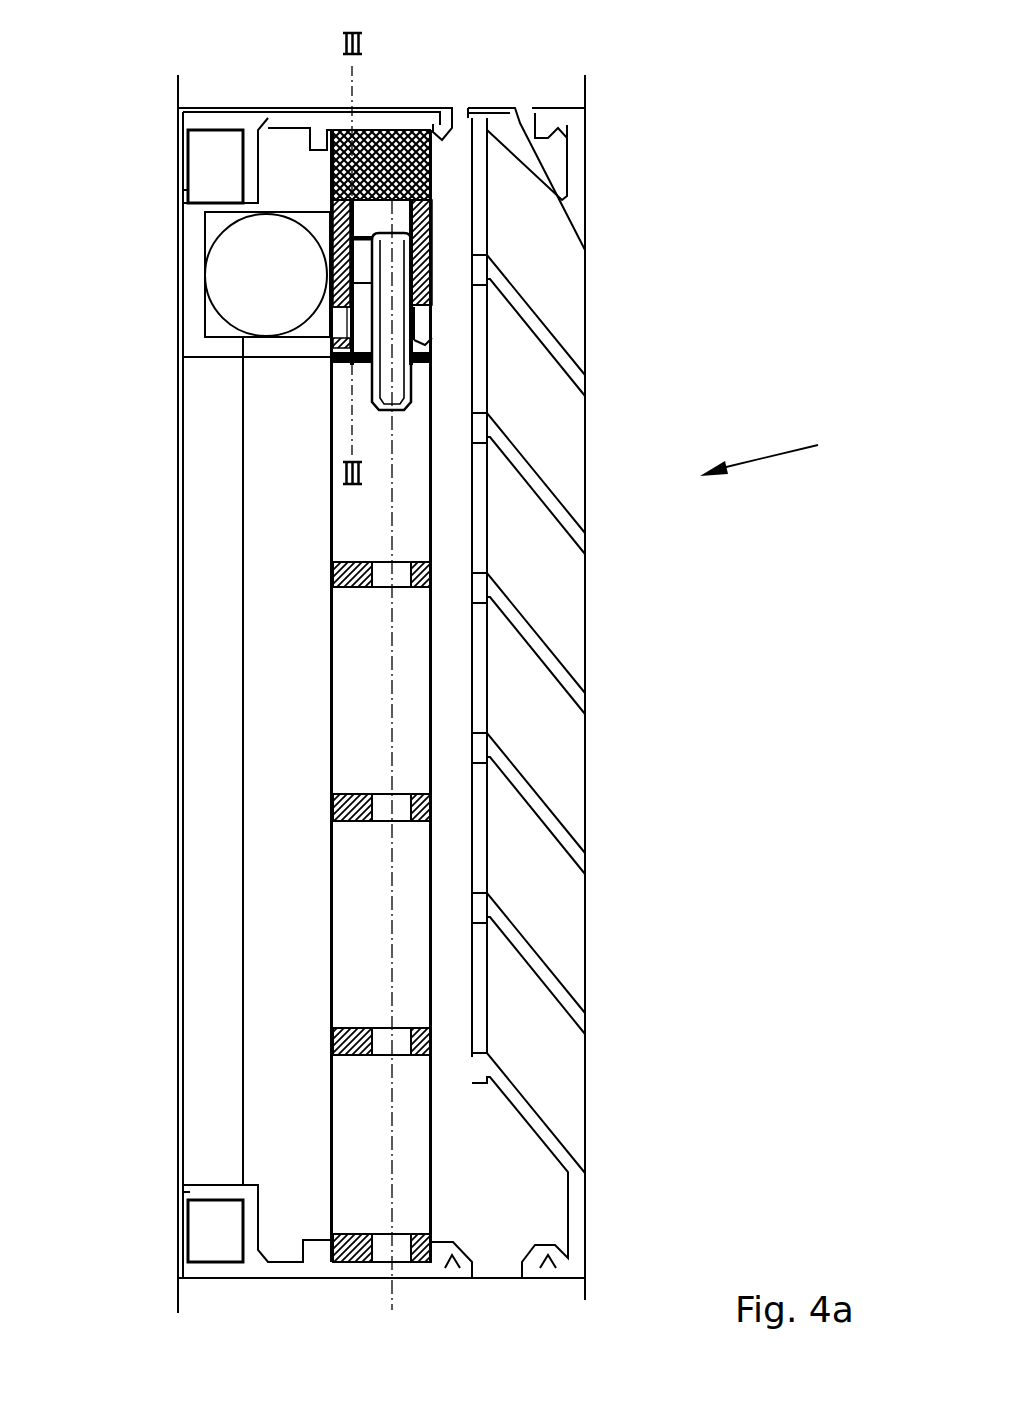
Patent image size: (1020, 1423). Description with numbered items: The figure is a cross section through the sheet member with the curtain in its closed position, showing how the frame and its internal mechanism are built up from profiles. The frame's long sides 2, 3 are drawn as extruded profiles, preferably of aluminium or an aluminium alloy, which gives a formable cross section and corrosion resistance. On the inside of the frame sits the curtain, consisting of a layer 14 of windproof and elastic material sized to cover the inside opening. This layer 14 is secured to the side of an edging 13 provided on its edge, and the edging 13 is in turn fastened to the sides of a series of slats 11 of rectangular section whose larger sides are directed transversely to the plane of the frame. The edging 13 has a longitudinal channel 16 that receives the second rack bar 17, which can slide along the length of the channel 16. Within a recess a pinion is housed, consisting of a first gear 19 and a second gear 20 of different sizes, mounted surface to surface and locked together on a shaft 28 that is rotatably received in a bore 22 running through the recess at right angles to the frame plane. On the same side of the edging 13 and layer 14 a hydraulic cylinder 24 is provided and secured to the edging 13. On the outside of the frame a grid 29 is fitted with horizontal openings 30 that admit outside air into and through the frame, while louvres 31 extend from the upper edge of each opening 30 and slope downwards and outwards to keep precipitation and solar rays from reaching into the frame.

The long side 2 is at (414, 106).
The long side 3 is at (352, 1268).
The slat 11 is at (330, 573).
The edging 13 is at (432, 253).
The layer 14 is at (432, 720).
The longitudinal channel 16 is at (353, 240).
The second rack bar 17 is at (330, 248).
The first gear 19 is at (420, 362).
The second gear 20 is at (352, 355).
The bore 22 is at (433, 328).
The hydraulic cylinder 24 is at (247, 283).
The shaft 28 is at (340, 323).
The grid 29 is at (778, 454).
The horizontal opening 30 is at (480, 653).
The louvre 31 is at (585, 540).